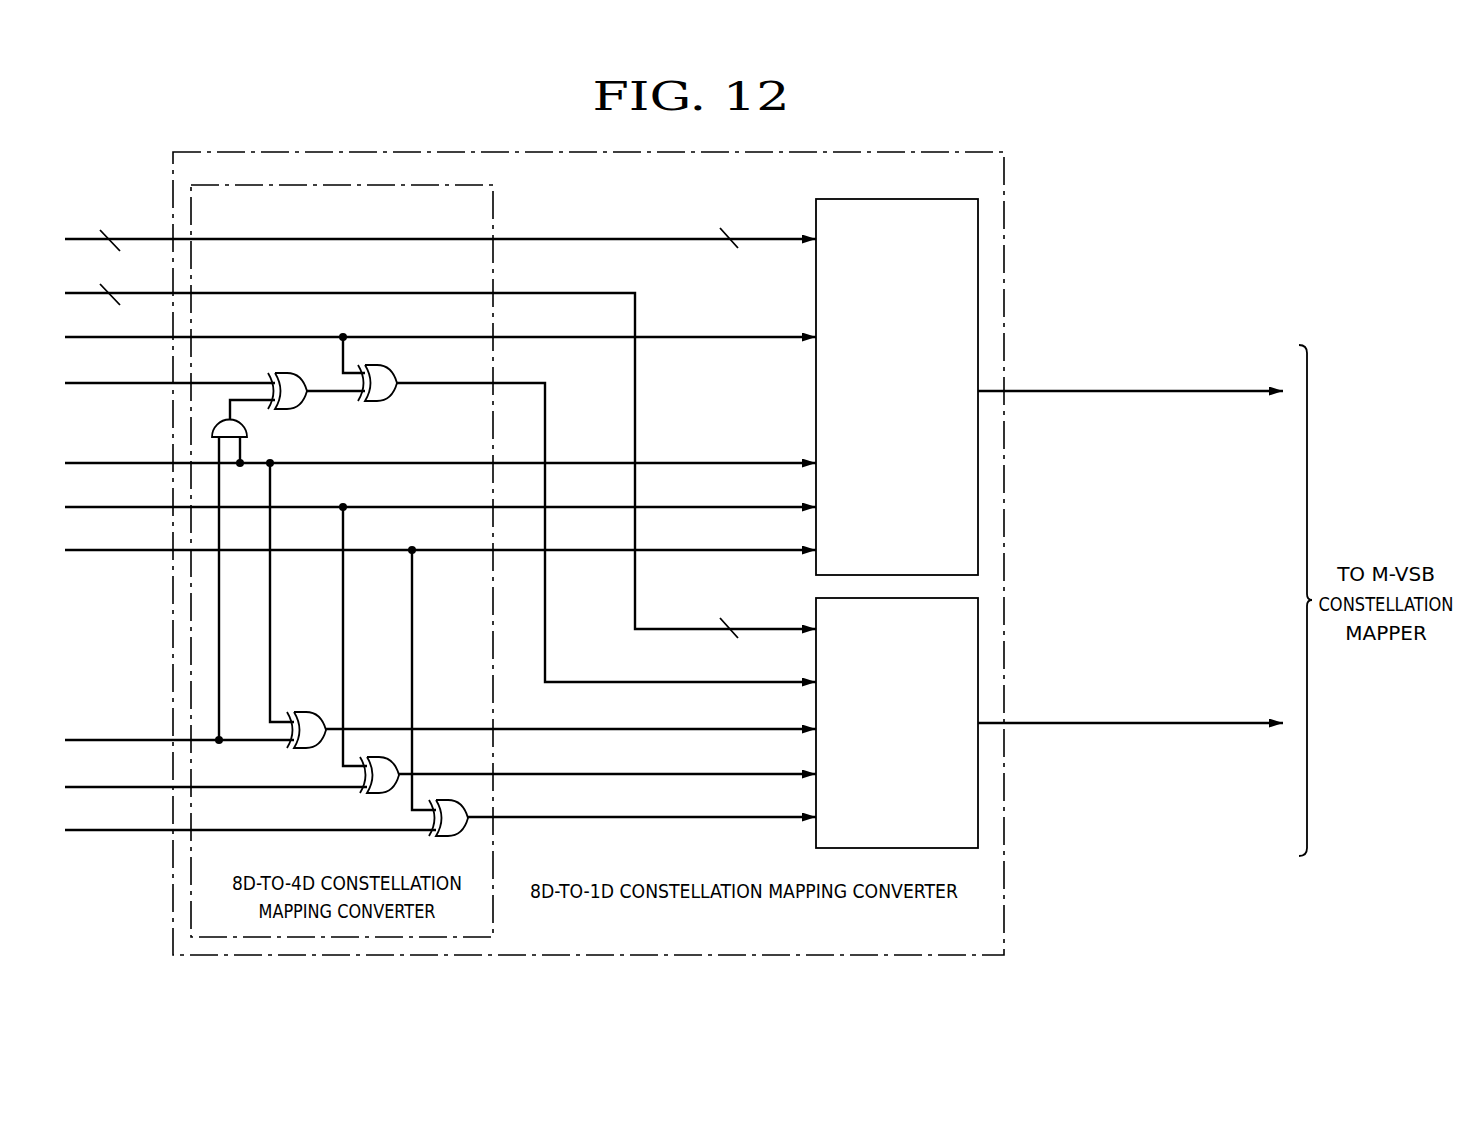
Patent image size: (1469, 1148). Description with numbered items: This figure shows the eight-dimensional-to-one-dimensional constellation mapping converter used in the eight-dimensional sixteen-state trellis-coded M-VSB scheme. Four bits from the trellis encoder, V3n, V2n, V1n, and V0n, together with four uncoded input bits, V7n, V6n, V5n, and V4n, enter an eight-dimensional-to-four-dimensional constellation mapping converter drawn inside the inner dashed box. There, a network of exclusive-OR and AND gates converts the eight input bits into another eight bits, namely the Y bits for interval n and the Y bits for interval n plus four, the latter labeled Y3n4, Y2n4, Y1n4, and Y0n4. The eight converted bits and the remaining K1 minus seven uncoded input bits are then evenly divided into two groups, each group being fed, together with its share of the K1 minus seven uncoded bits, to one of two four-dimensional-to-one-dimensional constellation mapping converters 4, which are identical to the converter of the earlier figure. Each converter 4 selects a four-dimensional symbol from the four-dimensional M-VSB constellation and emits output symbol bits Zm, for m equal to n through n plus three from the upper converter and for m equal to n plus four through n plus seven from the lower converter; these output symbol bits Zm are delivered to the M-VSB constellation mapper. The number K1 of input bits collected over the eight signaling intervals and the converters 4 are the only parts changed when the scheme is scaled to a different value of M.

The four-dimensional-to-one-dimensional constellation mapping converter 4 is at (897, 523).
The number of input bits K1 is at (440, 421).
The uncoded input bit V7n is at (440, 338).
The uncoded input bit V6n is at (170, 369).
The uncoded input bit V5n is at (440, 584).
The uncoded input bit V4n is at (440, 620).
The trellis encoder output bit V3n is at (440, 664).
The trellis encoder output bit V2n is at (179, 728).
The trellis encoder output bit V1n is at (216, 773).
The trellis encoder output bit V0n is at (250, 816).
The converted bit Y3n+4 Y3n4 is at (514, 523).
The converted bit Y2n+4 Y2n4 is at (551, 722).
The converted bit Y1n+4 Y1n4 is at (588, 767).
The converted bit Y0n+4 Y0n4 is at (622, 810).
The output symbol bits Zm is at (1227, 484).